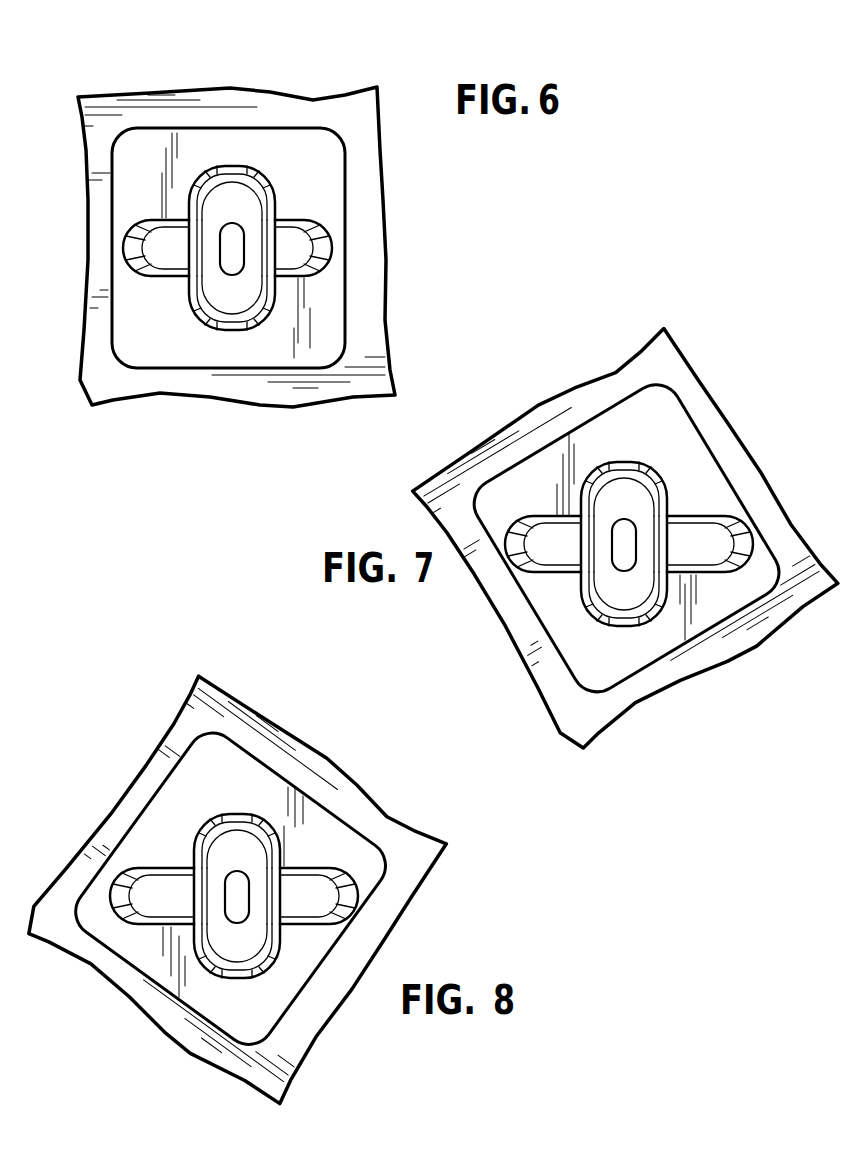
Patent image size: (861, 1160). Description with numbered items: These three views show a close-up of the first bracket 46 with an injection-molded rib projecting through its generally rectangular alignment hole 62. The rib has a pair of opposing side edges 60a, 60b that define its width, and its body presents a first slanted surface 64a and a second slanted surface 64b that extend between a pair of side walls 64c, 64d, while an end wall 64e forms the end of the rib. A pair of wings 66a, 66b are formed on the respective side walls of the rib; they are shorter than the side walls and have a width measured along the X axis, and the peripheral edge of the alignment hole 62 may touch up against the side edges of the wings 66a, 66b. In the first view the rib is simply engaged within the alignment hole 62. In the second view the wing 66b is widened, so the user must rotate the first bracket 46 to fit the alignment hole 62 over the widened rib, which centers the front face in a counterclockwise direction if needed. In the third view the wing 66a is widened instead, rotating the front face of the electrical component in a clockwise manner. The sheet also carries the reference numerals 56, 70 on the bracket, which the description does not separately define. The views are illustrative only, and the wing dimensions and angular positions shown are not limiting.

In FIG. 6, the first bracket 46 is at (363, 73).
In FIG. 7, the first bracket 46 is at (708, 687).
In FIG. 8, the first bracket 46 is at (155, 1040).
In FIG. 6, the backing layer 56 is at (235, 201).
In FIG. 7, the backing layer 56 is at (622, 521).
In FIG. 8, the backing layer 56 is at (240, 873).
In FIG. 6, the adhesive border 70 is at (237, 339).
In FIG. 7, the adhesive border 70 is at (673, 616).
In FIG. 8, the adhesive border 70 is at (185, 965).
In FIG. 6, the alignment hole 62 is at (212, 128).
In FIG. 7, the alignment hole 62 is at (662, 412).
In FIG. 8, the alignment hole 62 is at (200, 763).
In FIG. 6, the side edge 60a is at (110, 262).
In FIG. 6, the side edge 60b is at (353, 240).
In FIG. 6, the first slanted surface 64a is at (232, 176).
In FIG. 7, the first slanted surface 64a is at (624, 469).
In FIG. 8, the first slanted surface 64a is at (237, 822).
In FIG. 6, the second slanted surface 64b is at (232, 321).
In FIG. 7, the second slanted surface 64b is at (624, 619).
In FIG. 8, the second slanted surface 64b is at (237, 974).
In FIG. 6, the side wall 64c is at (178, 280).
In FIG. 7, the side wall 64c is at (573, 569).
In FIG. 8, the side wall 64c is at (164, 916).
In FIG. 6, the side wall 64d is at (300, 278).
In FIG. 7, the side wall 64d is at (697, 561).
In FIG. 8, the side wall 64d is at (289, 927).
In FIG. 6, the end wall 64e is at (263, 249).
In FIG. 7, the end wall 64e is at (658, 545).
In FIG. 8, the end wall 64e is at (271, 897).
In FIG. 6, the wing 66a is at (157, 219).
In FIG. 7, the wing 66a is at (543, 517).
In FIG. 8, the wing 66a is at (152, 870).
In FIG. 6, the wing 66b is at (302, 219).
In FIG. 7, the wing 66b is at (710, 522).
In FIG. 8, the wing 66b is at (319, 873).